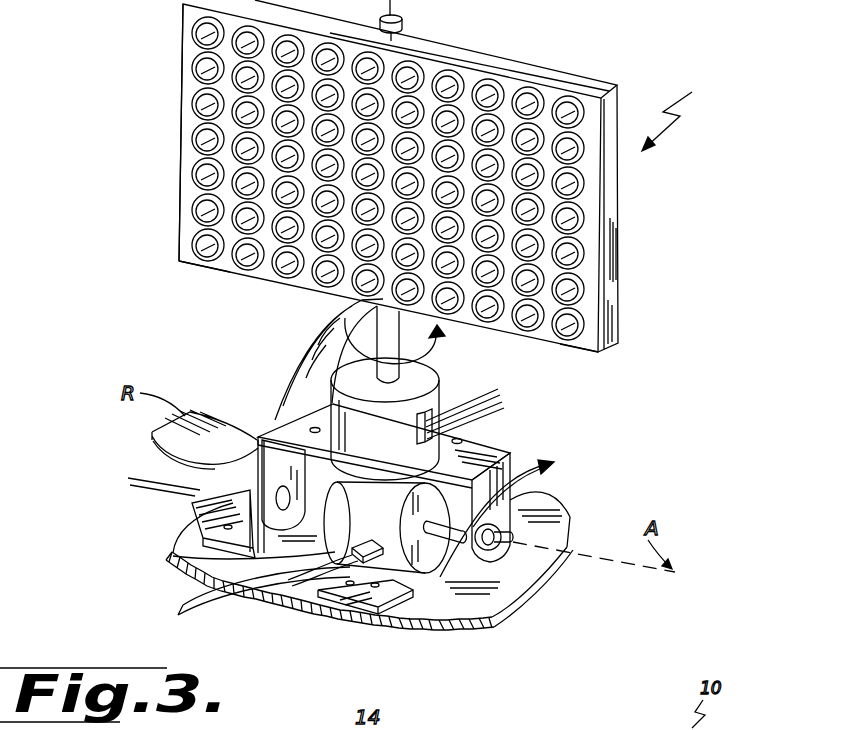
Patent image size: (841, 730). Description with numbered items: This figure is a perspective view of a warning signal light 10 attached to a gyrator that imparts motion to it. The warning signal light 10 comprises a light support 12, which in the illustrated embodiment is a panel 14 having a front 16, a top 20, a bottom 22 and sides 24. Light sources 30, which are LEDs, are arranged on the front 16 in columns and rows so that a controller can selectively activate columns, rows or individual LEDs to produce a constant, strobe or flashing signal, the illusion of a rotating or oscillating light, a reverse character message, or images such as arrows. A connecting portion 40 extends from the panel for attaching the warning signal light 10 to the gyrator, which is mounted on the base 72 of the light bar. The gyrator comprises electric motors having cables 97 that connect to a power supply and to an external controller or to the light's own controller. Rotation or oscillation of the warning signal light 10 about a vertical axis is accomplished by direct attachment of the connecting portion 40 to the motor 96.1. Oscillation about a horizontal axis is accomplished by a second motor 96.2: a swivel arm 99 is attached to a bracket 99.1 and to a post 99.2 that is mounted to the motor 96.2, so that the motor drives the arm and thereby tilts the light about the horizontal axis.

The warning signal light 10 is at (676, 109).
The light support 12 is at (608, 247).
The panel 14 is at (438, 178).
The front 16 is at (594, 340).
The top 20 is at (548, 70).
The bottom 22 is at (206, 268).
The sides 24 is at (182, 80).
The light sources 30 is at (206, 139).
The connecting portion 40 is at (446, 357).
The base 72 is at (523, 592).
The motor 96.1 is at (500, 456).
The motor 96.2 is at (170, 556).
The cables 97 is at (490, 413).
The swivel arm 99 is at (195, 466).
The bracket 99.1 is at (186, 511).
The post 99.2 is at (440, 577).